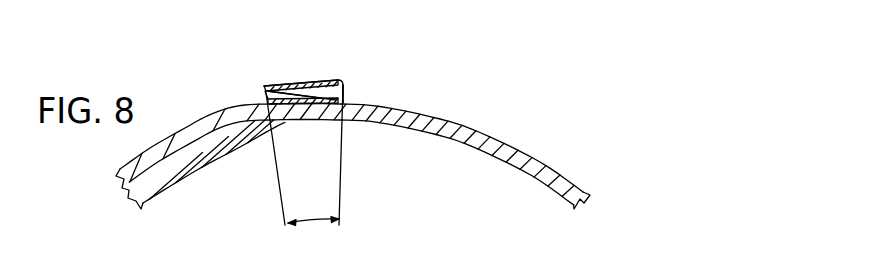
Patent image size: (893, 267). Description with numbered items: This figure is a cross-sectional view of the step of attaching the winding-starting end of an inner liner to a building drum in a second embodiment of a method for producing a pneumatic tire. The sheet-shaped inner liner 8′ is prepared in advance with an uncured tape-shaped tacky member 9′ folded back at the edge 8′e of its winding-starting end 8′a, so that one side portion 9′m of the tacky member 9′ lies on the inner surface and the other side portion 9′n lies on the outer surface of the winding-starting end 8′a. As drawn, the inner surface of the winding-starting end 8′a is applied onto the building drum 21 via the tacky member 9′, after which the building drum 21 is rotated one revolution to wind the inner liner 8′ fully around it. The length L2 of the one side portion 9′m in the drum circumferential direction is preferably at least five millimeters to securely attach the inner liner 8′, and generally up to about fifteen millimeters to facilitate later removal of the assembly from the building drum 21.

The building drum 21 is at (491, 136).
The sheet-shaped inner liner 8′ is at (197, 121).
The uncured tape-shaped tacky member 9′ is at (339, 81).
The one side portion of the tacky member 9′m is at (275, 88).
The other side portion of the tacky member 9′n is at (288, 96).
The winding-starting end of the inner liner 8′a is at (308, 92).
The edge of the winding-starting end 8′e is at (344, 91).
The length in the drum circumferential direction of the one side portion L2 is at (304, 155).